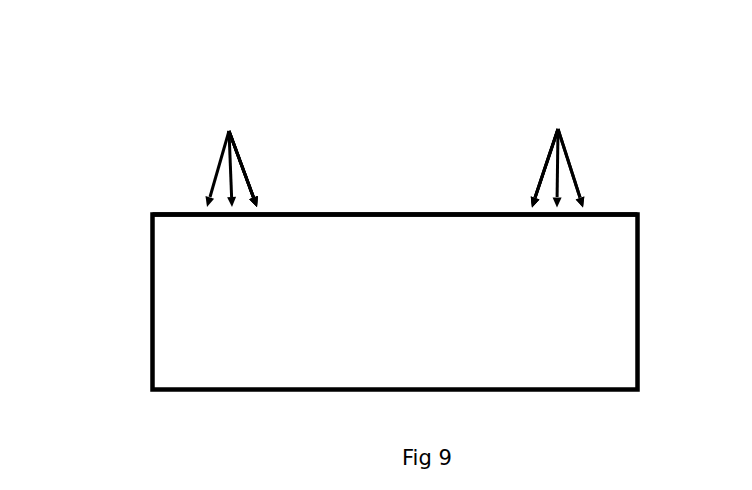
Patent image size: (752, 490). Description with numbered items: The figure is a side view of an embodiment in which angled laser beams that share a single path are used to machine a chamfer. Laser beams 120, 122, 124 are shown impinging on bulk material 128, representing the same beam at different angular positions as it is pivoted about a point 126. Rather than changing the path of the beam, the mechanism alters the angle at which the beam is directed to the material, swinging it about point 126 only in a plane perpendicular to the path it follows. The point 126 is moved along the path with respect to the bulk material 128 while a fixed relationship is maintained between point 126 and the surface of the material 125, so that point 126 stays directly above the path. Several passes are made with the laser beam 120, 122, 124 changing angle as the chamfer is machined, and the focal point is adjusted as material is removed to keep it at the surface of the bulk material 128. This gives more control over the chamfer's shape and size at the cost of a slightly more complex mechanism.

The laser beam 120 is at (548, 173).
The laser beam 122 is at (530, 195).
The laser beam 124 is at (572, 165).
The surface of the material 125 is at (618, 210).
The point 126 is at (558, 129).
The bulk material 128 is at (149, 247).